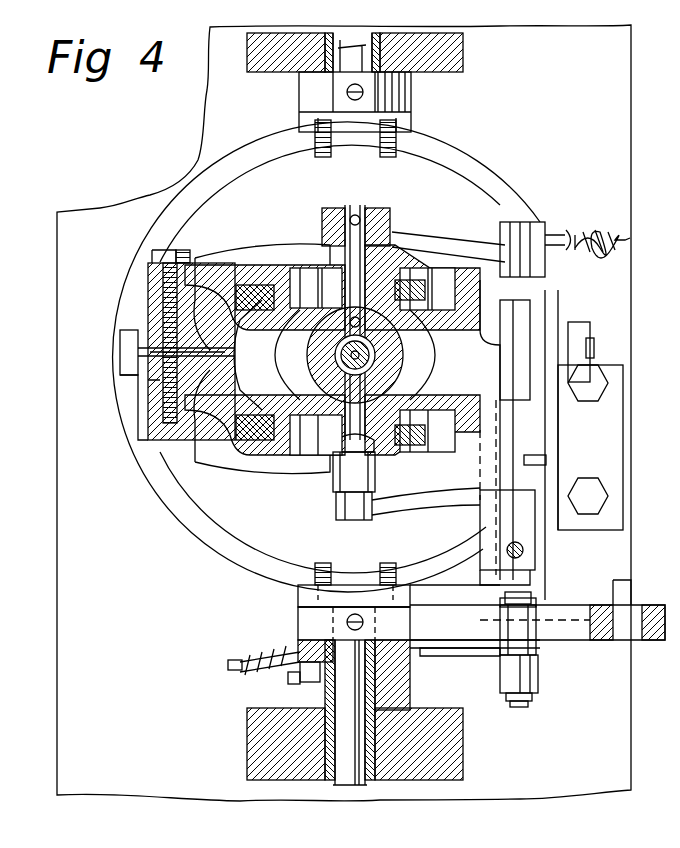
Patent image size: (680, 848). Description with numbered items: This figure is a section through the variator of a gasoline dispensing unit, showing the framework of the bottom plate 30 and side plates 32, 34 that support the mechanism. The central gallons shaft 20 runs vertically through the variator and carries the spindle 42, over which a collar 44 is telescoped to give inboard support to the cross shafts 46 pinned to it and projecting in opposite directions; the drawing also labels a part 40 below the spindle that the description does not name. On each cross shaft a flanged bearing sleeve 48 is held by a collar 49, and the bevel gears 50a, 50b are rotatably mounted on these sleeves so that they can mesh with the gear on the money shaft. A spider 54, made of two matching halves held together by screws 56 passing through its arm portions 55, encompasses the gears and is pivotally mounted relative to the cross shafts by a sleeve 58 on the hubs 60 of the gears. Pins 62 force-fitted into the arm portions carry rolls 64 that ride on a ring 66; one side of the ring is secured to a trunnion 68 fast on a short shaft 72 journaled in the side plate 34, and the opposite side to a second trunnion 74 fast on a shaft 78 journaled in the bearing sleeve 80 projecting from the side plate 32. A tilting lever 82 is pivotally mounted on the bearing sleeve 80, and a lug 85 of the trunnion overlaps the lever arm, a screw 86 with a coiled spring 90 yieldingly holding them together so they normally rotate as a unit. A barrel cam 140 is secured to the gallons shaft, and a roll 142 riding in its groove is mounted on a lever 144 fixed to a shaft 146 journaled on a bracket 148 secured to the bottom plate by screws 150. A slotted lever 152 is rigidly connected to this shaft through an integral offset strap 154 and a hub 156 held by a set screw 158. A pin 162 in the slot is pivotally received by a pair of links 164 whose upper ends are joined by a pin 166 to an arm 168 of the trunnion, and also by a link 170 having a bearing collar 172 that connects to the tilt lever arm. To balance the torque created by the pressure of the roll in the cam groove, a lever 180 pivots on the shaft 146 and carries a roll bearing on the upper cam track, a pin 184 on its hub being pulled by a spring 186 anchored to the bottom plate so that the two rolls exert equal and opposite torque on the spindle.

The bottom plate 30 is at (578, 104).
The side plate 32 is at (247, 742).
The side plate 34 is at (463, 52).
The central shaft 20 is at (312, 352).
The lower shaft extension 40 is at (333, 478).
The spindle 42 is at (378, 352).
The collar 44 is at (308, 372).
The cross shafts 46 is at (362, 205).
The flanged bearing sleeve 48 is at (390, 216).
The collar 49 is at (322, 208).
The bevel gear 50a is at (206, 448).
The bevel gear 50b is at (237, 262).
The spider 54 is at (235, 265).
The arm portions 55 is at (146, 395).
The screws 56 is at (192, 250).
The sleeve 58 is at (292, 268).
The hubs 60 is at (400, 255).
The pins 62 is at (198, 350).
The rolls 64 is at (120, 380).
The ring 66 is at (163, 508).
The trunnion 68 is at (411, 120).
The short shaft 72 is at (350, 118).
The second trunnion 74 is at (410, 593).
The shaft 78 is at (347, 596).
The bearing sleeve 80 is at (385, 770).
The tilting lever 82 is at (410, 690).
The lug 85 is at (305, 682).
The screw 86 is at (234, 672).
The spring 90 is at (258, 650).
The barrel cam 140 is at (240, 365).
The roll 142 is at (336, 504).
The lever 144 is at (395, 505).
The shaft 146 is at (480, 524).
The bracket 148 is at (480, 500).
The screws 150 is at (608, 388).
The slotted lever 152 is at (632, 643).
The offset strap 154 is at (632, 578).
The hub 156 is at (490, 572).
The set screw 158 is at (523, 550).
The pin 162 is at (518, 707).
The links 164 is at (540, 600).
The pin 166 is at (528, 592).
The arm 168 is at (455, 652).
The link 170 is at (448, 645).
The bearing collar 172 is at (538, 675).
The lever 180 is at (436, 236).
The pin 184 is at (570, 232).
The spring 186 is at (588, 230).